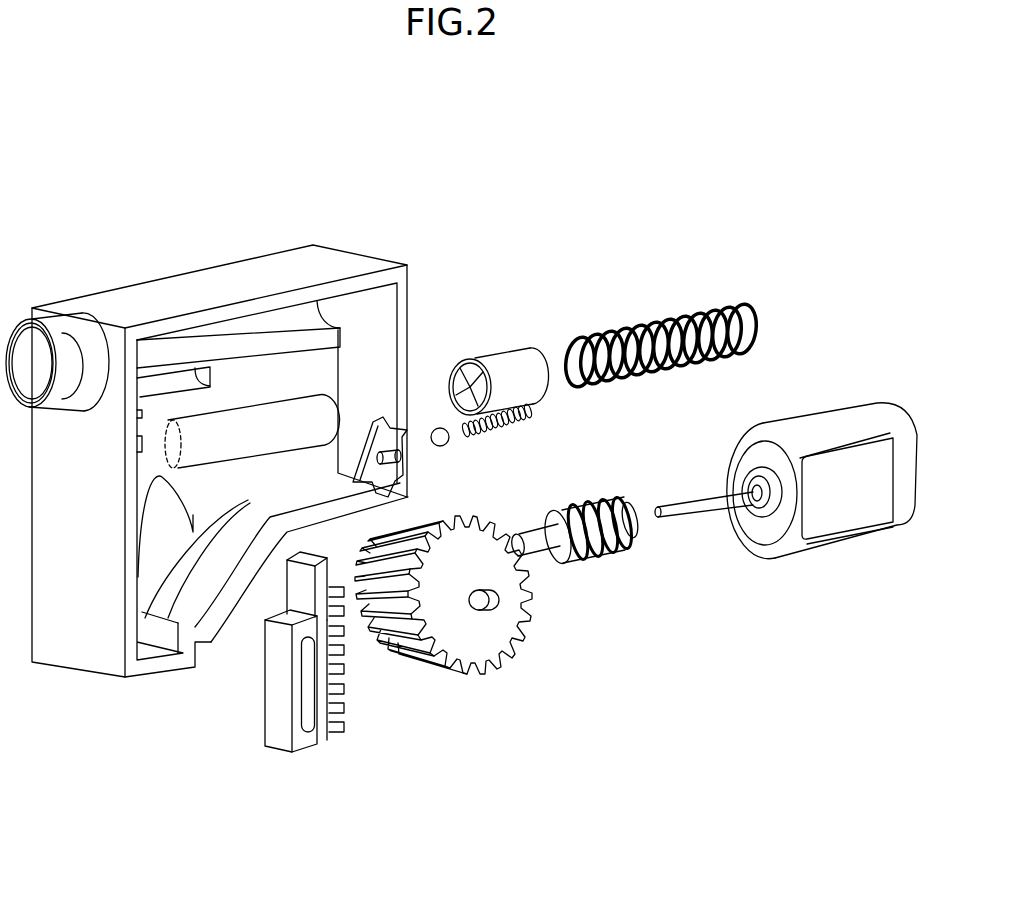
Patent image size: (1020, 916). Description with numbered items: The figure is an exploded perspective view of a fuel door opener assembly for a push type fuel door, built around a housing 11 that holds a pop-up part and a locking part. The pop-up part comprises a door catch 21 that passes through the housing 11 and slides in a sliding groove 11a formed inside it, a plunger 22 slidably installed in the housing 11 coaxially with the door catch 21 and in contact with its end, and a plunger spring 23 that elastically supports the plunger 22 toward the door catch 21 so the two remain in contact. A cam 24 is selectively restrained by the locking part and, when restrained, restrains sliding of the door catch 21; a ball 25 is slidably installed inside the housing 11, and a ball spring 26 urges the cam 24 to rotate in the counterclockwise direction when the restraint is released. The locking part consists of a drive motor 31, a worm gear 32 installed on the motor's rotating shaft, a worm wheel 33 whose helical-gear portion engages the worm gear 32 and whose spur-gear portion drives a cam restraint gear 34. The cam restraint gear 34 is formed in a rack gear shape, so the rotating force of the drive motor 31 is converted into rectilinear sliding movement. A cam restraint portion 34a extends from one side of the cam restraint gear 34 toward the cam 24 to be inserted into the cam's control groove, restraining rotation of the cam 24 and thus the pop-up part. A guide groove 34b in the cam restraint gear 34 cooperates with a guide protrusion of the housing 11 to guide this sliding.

The housing 11 is at (122, 303).
The sliding groove 11a is at (200, 346).
The door catch 21 is at (267, 415).
The plunger 22 is at (509, 362).
The plunger spring 23 is at (701, 305).
The cam 24 is at (376, 425).
The ball 25 is at (450, 443).
The ball spring 26 is at (535, 413).
The drive motor 31 is at (855, 518).
The worm gear 32 is at (586, 560).
The worm wheel 33 is at (380, 620).
The cam restraint gear 34 is at (275, 700).
The cam restraint portion 34a is at (292, 593).
The guide groove 34b is at (313, 720).